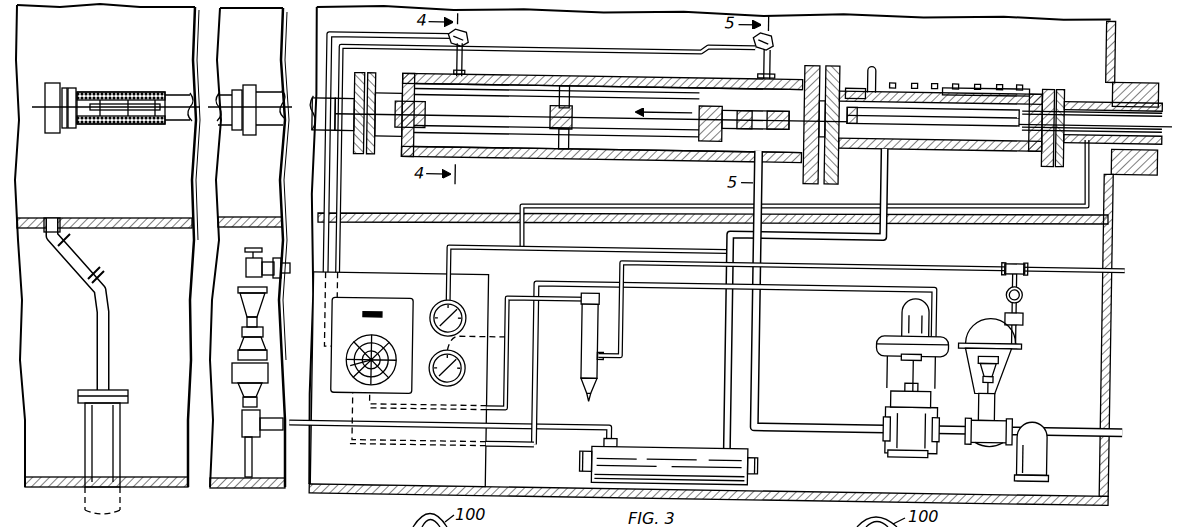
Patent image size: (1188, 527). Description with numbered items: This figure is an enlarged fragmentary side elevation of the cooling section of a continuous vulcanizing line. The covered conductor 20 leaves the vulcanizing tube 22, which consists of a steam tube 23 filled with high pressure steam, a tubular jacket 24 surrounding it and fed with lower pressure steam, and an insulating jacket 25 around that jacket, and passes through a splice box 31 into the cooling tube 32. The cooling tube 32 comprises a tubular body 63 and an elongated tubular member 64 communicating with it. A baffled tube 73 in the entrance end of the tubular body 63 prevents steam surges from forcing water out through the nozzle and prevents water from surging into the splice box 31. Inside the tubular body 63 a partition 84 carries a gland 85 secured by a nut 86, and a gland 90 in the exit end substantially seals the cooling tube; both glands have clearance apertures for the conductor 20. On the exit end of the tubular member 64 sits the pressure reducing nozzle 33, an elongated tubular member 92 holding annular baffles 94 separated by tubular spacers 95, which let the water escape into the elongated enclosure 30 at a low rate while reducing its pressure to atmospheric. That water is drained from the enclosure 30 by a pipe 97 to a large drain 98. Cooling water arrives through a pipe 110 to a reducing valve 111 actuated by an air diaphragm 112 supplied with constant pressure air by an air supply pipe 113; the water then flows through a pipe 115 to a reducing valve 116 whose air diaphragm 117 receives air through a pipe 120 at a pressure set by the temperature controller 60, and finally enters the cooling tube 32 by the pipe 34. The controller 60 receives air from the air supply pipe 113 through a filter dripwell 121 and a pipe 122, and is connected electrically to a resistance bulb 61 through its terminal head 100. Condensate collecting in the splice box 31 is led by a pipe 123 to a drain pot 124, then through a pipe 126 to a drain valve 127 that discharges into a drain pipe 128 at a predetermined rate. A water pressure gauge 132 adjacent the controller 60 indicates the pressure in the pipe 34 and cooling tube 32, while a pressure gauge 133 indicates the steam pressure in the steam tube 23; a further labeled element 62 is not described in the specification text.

The covered conductor 20 is at (950, 122).
The vulcanizing tube 22 is at (1143, 173).
The steam tube 23 is at (1082, 105).
The tubular jacket 24 is at (1095, 96).
The insulating jacket 25 is at (1139, 76).
The elongated enclosure 30 is at (1023, 224).
The splice box 31 is at (990, 85).
The cooling tube 32 is at (507, 168).
The pressure reducing nozzle 33 is at (250, 121).
The pipe 34 is at (762, 317).
The temperature controller 60 is at (338, 412).
The resistance bulb 61 is at (757, 66).
The inlet stub 62 is at (474, 62).
The tubular body 63 is at (402, 162).
The elongated tubular member 64 is at (263, 92).
The baffled tube 73 is at (697, 128).
The partition 84 is at (570, 138).
The gland 85 is at (574, 103).
The nut 86 is at (550, 108).
The gland 90 is at (412, 121).
The elongated tubular member 92 is at (116, 87).
The annular baffles 94 is at (125, 111).
The tubular spacers 95 is at (163, 121).
The pipe 97 is at (82, 282).
The drain 98 is at (88, 433).
The terminal head 100 is at (466, 40).
The pipe 110 is at (1073, 421).
The reducing valve 111 is at (1000, 418).
The air diaphragm 112 is at (1024, 341).
The air supply pipe 113 is at (1069, 262).
The pipe 115 is at (955, 431).
The reducing valve 116 is at (886, 420).
The air diaphragm 117 is at (884, 342).
The pipe 120 is at (694, 290).
The filter dripwell 121 is at (584, 352).
The pipe 122 is at (565, 304).
The pipe 123 is at (859, 236).
The drain pot 124 is at (672, 447).
The pipe 126 is at (565, 433).
The drain valve 127 is at (240, 382).
The drain pipe 128 is at (276, 270).
The water pressure gauge 132 is at (441, 306).
The pressure gauge 133 is at (451, 390).